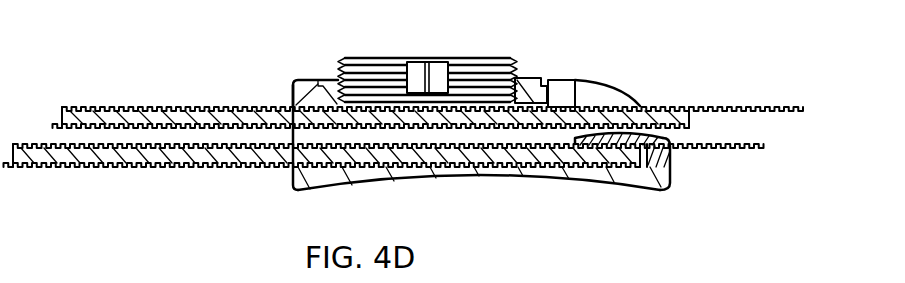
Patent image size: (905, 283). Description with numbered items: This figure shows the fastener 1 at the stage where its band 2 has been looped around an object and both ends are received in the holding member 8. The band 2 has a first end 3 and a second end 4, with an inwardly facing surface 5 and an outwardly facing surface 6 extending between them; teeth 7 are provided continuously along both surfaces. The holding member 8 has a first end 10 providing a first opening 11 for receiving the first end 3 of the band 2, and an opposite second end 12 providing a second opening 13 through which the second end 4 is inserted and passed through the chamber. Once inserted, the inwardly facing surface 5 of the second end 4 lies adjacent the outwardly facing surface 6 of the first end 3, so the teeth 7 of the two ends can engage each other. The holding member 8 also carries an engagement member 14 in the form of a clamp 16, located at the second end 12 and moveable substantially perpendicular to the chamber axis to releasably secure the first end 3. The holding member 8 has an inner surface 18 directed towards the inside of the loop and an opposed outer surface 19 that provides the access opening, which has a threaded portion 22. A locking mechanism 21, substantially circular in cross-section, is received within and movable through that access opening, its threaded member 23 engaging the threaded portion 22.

The fastener 1 is at (700, 61).
The band 2 is at (84, 111).
The first end 3 is at (617, 167).
The second end 4 is at (66, 108).
The inwardly facing surface 5 is at (153, 120).
The outwardly facing surface 6 is at (142, 143).
The teeth 7 is at (227, 107).
The holding member 8 is at (569, 80).
The first end 10 is at (292, 188).
The first opening 11 is at (292, 82).
The second end 12 is at (642, 105).
The second opening 13 is at (616, 105).
The engagement member 14 is at (671, 148).
The clamp 16 is at (671, 167).
The inner surface 18 is at (415, 181).
The outer surface 19 is at (324, 80).
The locking mechanism 21 is at (478, 73).
The threaded portion 22 is at (526, 77).
The threaded member 23 is at (344, 86).